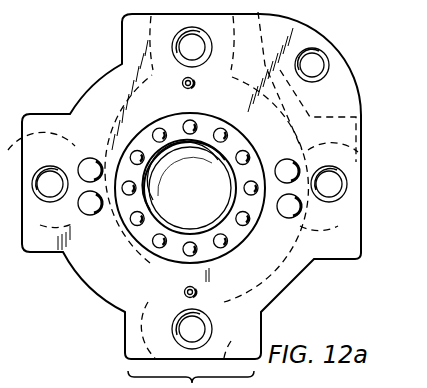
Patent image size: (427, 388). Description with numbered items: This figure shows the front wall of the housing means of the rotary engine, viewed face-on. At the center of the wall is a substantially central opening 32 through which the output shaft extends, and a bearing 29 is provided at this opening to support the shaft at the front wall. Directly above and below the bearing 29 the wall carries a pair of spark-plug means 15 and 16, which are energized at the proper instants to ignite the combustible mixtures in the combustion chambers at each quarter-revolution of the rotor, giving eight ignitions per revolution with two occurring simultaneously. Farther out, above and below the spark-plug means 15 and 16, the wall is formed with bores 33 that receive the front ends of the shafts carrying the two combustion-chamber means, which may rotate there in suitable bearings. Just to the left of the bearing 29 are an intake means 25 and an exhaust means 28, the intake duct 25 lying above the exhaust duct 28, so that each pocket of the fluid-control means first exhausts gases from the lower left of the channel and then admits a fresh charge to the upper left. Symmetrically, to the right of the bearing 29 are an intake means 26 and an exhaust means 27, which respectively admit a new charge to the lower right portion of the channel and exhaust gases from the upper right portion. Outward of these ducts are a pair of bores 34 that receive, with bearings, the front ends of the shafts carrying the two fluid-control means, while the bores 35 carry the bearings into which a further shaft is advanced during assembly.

The spark-plug means 15 is at (184, 87).
The spark-plug means 16 is at (184, 291).
The intake means 25 is at (90, 166).
The intake means 26 is at (286, 214).
The exhaust means 27 is at (286, 168).
The exhaust means 28 is at (95, 212).
The bearing 29 is at (234, 237).
The central opening 32 is at (172, 202).
The bores 33 is at (200, 55).
The bores 34 is at (52, 191).
The bores 35 is at (320, 68).